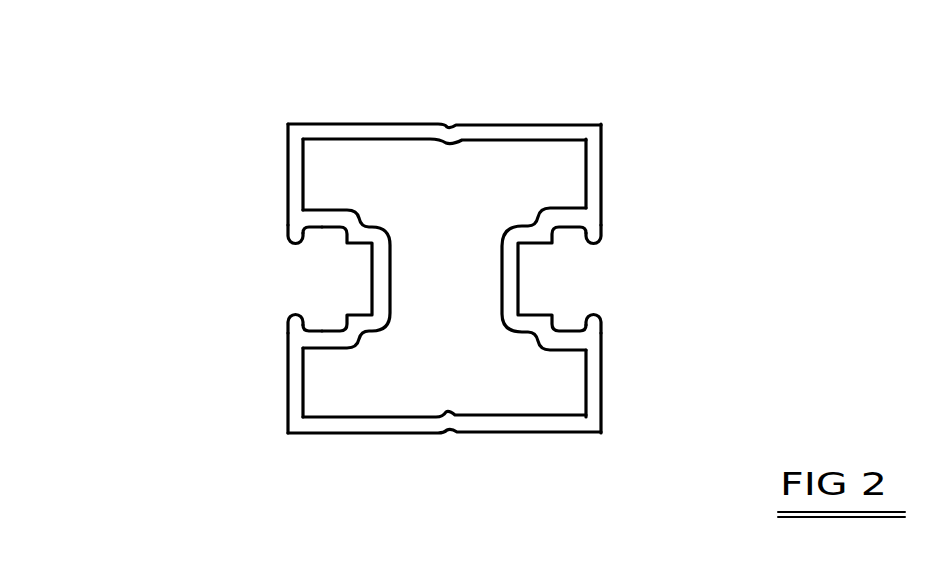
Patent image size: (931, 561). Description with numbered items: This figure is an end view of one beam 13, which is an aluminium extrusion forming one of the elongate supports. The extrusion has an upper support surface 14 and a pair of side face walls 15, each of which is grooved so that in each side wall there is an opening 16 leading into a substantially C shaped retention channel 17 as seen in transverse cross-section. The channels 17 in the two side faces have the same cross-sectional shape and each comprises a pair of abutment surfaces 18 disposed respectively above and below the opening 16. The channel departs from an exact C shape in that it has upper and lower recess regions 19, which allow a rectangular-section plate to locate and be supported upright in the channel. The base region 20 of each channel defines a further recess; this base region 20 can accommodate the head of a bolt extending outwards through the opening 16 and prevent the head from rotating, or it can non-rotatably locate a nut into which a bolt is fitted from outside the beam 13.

The beam 13 is at (405, 228).
The upper support surface 14 is at (347, 121).
The side face walls 15 is at (283, 165).
The opening 16 is at (596, 275).
The retention channel 17 is at (552, 279).
The abutment surfaces 18 is at (305, 240).
The recess regions 19 is at (315, 250).
The base region 20 is at (355, 278).